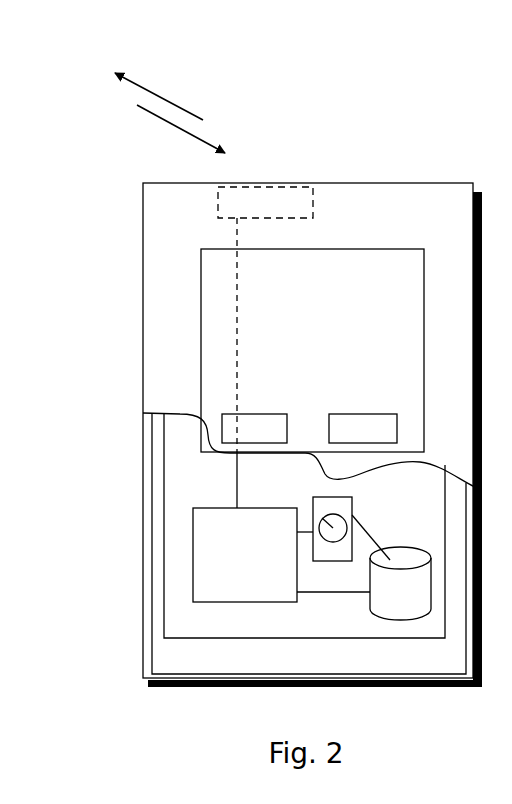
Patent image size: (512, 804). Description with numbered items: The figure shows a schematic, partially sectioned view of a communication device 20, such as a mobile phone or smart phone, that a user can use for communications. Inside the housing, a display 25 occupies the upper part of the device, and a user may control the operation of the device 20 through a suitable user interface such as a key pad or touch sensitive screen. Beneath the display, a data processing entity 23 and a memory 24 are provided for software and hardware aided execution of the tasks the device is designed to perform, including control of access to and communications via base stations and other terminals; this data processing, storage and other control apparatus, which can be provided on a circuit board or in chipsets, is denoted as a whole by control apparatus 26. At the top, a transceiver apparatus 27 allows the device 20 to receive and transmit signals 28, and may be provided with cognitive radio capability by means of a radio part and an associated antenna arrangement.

The communication device 20 is at (143, 238).
The data processing entity 23 is at (202, 532).
The memory 24 is at (393, 593).
The display 25 is at (220, 303).
The control apparatus 26 is at (192, 620).
The transceiver apparatus 27 is at (250, 201).
The signals 28 is at (140, 83).